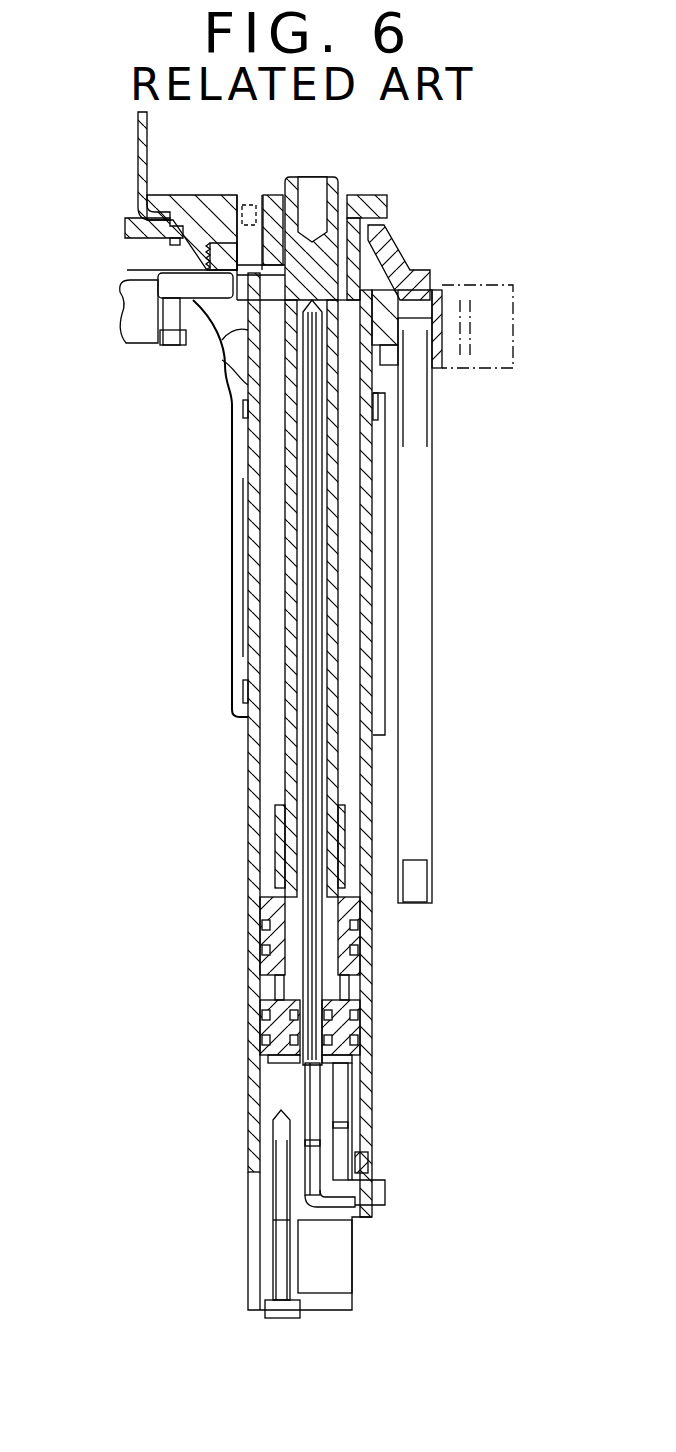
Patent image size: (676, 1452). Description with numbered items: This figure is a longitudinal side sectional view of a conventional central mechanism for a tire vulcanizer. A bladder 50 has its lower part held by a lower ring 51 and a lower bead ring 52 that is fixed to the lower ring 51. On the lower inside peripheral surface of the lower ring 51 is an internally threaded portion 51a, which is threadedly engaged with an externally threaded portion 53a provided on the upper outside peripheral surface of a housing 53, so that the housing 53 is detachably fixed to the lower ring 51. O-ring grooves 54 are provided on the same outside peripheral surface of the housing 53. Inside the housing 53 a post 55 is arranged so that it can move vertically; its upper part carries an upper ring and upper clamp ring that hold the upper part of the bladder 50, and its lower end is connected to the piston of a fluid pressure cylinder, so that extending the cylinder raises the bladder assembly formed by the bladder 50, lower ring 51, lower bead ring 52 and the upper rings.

The bladder 50 is at (138, 143).
The lower ring 51 is at (200, 195).
The internally threaded portion 51a is at (208, 250).
The lower bead ring 52 is at (140, 216).
The housing 53 is at (245, 437).
The externally threaded portion 53a is at (408, 268).
The O-ring grooves 54 is at (398, 248).
The post 55 is at (290, 590).